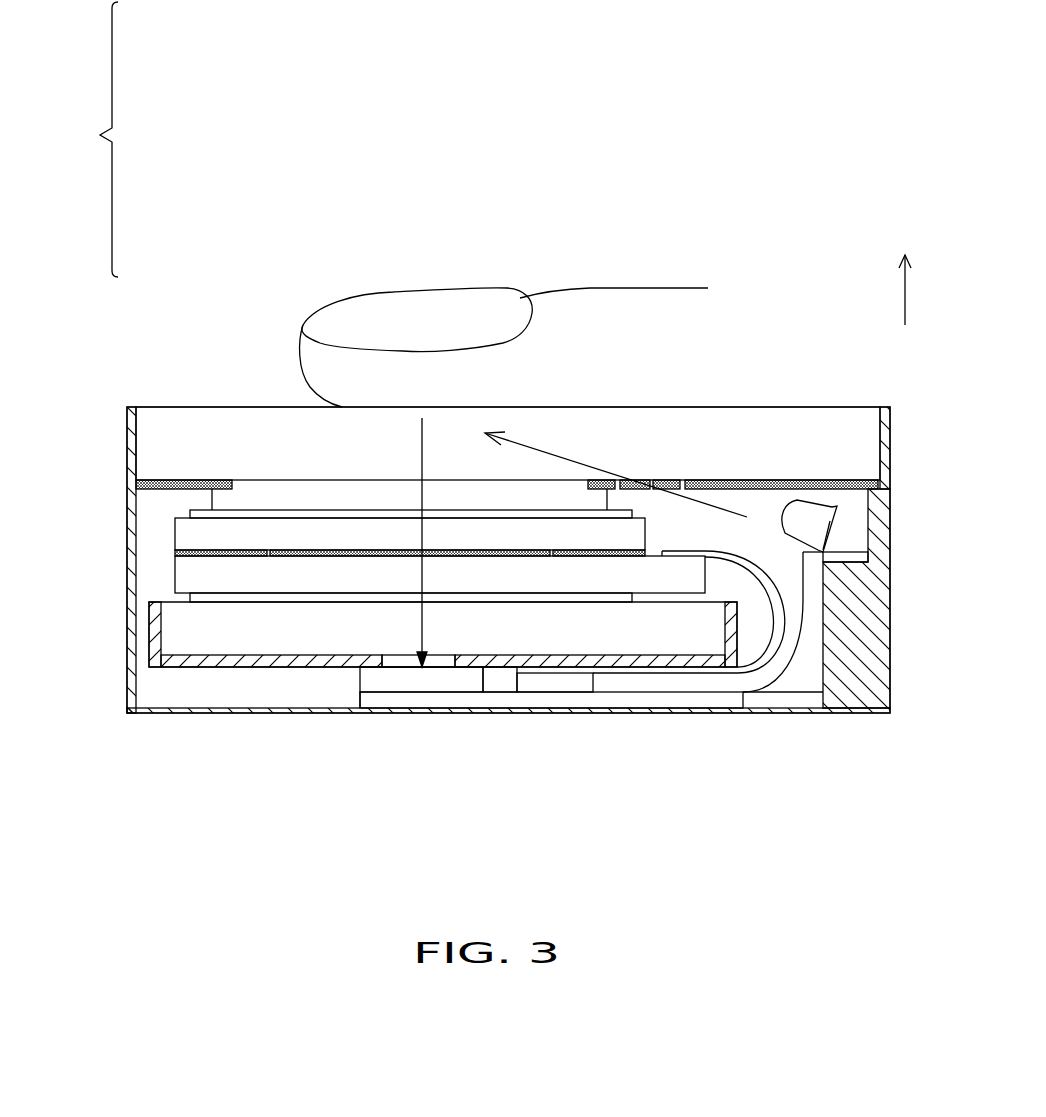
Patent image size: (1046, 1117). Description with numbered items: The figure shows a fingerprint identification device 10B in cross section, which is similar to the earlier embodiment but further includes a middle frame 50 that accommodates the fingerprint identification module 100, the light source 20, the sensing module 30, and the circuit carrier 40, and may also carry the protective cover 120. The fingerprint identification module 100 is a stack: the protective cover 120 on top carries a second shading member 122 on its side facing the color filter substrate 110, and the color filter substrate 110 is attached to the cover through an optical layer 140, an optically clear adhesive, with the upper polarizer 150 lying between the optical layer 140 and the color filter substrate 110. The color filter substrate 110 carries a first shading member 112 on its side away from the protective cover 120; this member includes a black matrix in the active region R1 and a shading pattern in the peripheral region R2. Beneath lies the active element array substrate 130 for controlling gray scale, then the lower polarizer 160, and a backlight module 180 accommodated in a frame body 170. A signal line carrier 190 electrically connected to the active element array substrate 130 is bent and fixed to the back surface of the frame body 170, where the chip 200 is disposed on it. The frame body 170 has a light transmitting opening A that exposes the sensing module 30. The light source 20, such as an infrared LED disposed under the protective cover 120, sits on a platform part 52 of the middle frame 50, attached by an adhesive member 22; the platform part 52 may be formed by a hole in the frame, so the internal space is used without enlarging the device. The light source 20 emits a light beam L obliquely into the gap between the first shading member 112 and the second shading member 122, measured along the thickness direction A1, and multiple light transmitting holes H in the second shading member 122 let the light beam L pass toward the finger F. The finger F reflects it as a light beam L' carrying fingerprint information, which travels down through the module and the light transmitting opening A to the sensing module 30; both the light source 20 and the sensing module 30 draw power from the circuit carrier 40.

The fingerprint identification device 10B is at (905, 838).
The light source 20 is at (826, 526).
The adhesive member 22 is at (858, 557).
The sensing module 30 is at (383, 682).
The circuit carrier 40 is at (637, 700).
The middle frame 50 is at (130, 700).
The platform part 52 is at (880, 618).
The fingerprint identification module 100 is at (106, 139).
The color filter substrate 110 is at (183, 538).
The first shading member 112 is at (188, 583).
The protective cover 120 is at (147, 433).
The second shading member 122 is at (142, 481).
The active element array substrate 130 is at (185, 595).
The optical layer 140 is at (223, 496).
The upper polarizer 150 is at (200, 513).
The lower polarizer 160 is at (208, 597).
The frame body 170 is at (535, 658).
The backlight module 180 is at (470, 630).
The signal line carrier 190 is at (757, 657).
The chip 200 is at (580, 682).
The light transmitting opening A is at (438, 668).
The thickness direction A1 is at (922, 290).
The finger F is at (590, 305).
The light transmitting holes H is at (615, 469).
The light beam L is at (616, 437).
The light beam with fingerprint information L' is at (374, 606).
The active region R1 is at (303, 557).
The peripheral region R2 is at (235, 557).